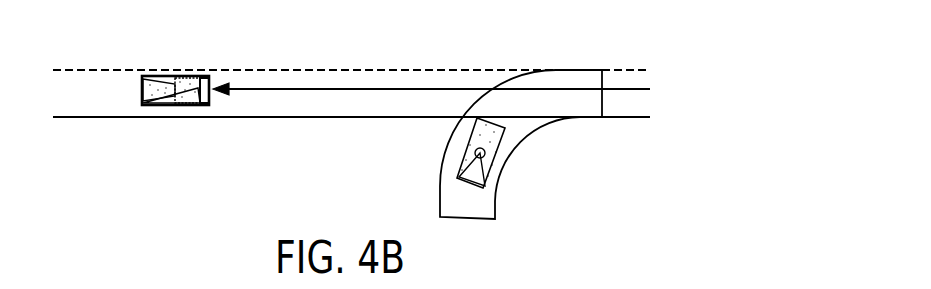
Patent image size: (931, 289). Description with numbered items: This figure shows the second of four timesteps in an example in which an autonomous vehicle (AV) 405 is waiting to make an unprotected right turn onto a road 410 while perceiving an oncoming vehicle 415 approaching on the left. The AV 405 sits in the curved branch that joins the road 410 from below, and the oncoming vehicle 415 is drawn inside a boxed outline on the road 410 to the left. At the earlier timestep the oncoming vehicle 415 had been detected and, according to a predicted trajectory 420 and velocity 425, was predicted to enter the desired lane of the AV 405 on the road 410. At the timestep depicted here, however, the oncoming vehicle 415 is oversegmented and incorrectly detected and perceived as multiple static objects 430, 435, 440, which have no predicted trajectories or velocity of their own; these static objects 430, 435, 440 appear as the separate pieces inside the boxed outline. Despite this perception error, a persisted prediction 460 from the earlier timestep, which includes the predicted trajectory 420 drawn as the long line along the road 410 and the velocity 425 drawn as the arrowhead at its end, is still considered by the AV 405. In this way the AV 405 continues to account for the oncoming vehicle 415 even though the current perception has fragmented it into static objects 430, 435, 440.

The autonomous vehicle 405 is at (492, 162).
The road 410 is at (406, 110).
The oncoming vehicle 415 is at (150, 100).
The predicted trajectory 420 is at (317, 92).
The velocity 425 is at (214, 100).
The static object 430 is at (210, 81).
The static object 435 is at (166, 77).
The static object 440 is at (176, 105).
The persisted prediction 460 is at (192, 77).